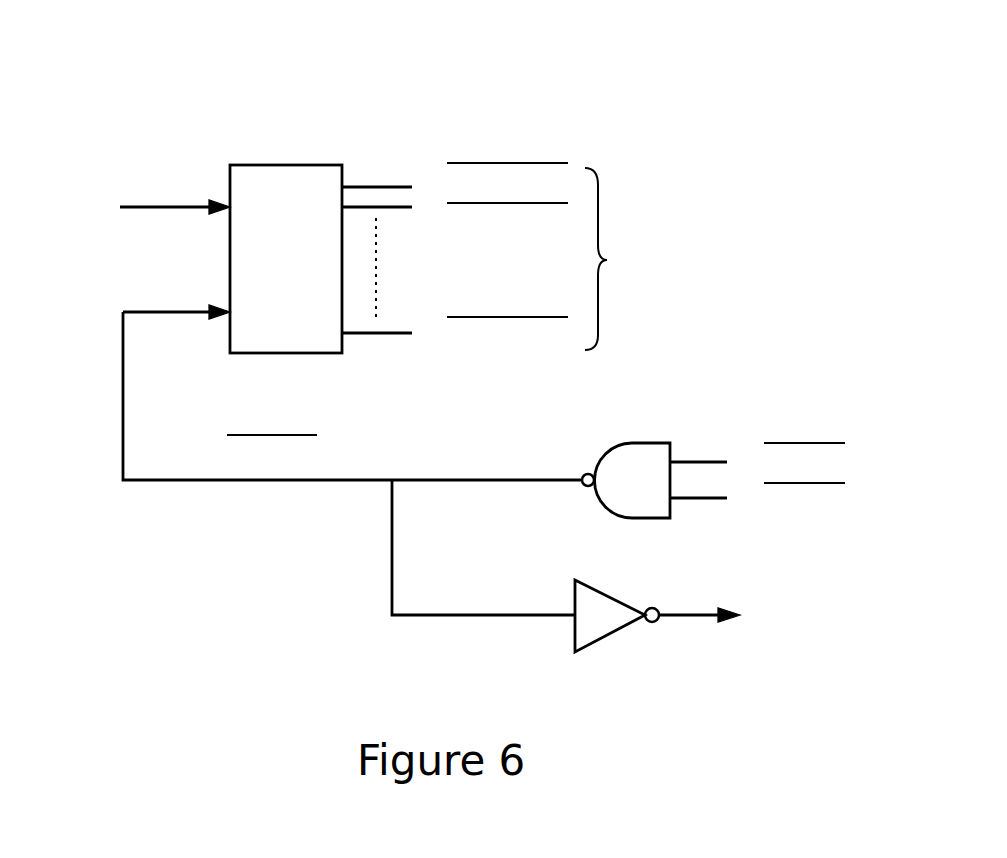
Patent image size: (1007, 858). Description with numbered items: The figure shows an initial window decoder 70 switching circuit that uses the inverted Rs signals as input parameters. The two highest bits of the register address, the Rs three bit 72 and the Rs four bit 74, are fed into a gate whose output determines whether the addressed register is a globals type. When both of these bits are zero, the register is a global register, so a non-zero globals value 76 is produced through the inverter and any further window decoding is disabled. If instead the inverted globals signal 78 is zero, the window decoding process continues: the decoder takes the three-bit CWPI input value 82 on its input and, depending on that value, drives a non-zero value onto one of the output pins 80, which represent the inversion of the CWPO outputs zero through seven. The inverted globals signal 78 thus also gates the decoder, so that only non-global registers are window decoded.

The decoder and gating circuit 70 is at (720, 105).
The Rs (3) register address bit 72 is at (698, 457).
The Rs (4) register address bit 74 is at (698, 503).
The globals value 76 is at (685, 625).
The globals zero signal 78 is at (357, 473).
The decoder output pins 80 is at (493, 257).
The CWPI (2:0) input value 82 is at (163, 208).